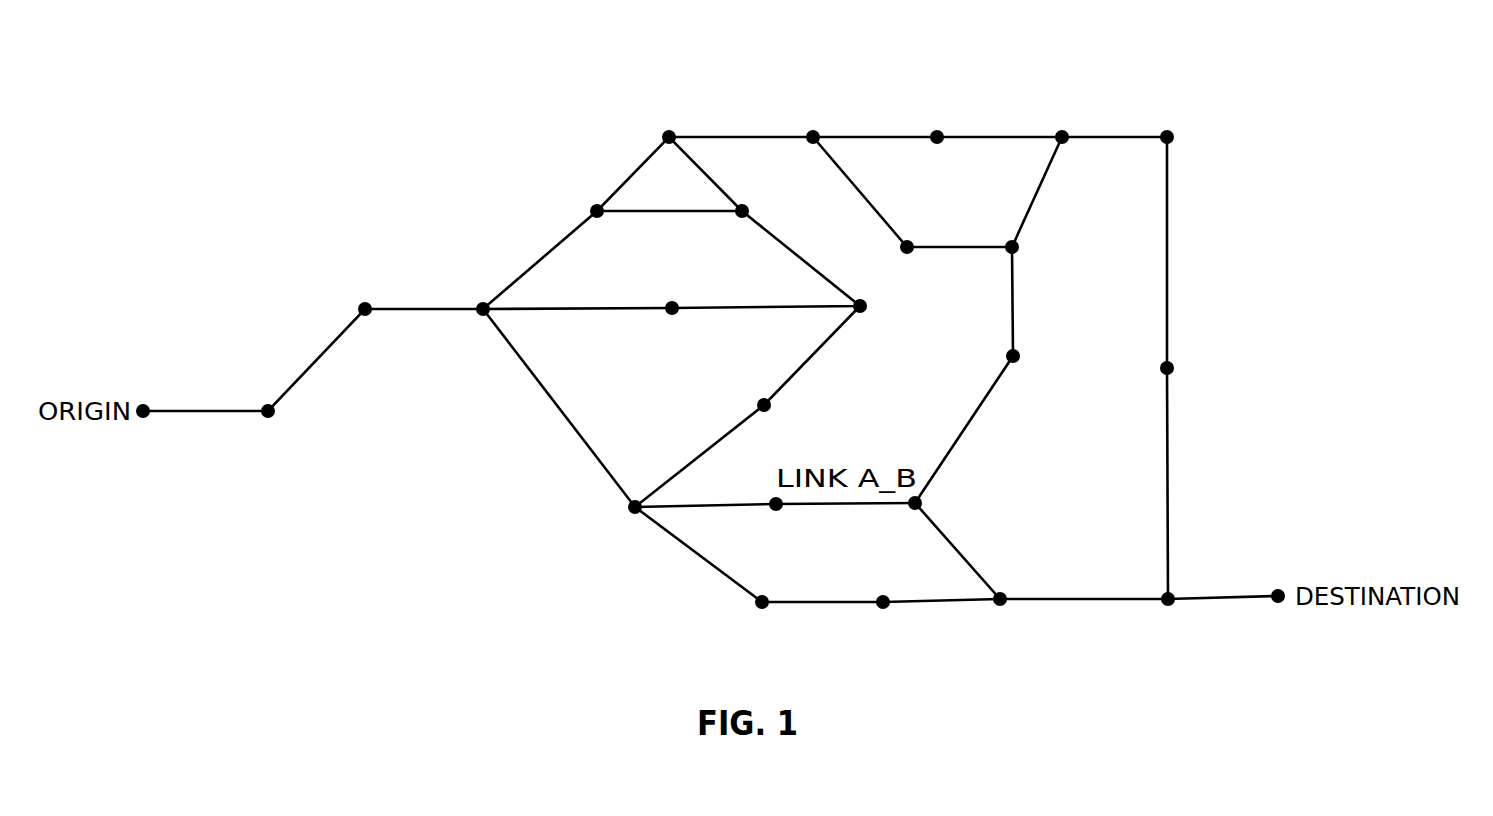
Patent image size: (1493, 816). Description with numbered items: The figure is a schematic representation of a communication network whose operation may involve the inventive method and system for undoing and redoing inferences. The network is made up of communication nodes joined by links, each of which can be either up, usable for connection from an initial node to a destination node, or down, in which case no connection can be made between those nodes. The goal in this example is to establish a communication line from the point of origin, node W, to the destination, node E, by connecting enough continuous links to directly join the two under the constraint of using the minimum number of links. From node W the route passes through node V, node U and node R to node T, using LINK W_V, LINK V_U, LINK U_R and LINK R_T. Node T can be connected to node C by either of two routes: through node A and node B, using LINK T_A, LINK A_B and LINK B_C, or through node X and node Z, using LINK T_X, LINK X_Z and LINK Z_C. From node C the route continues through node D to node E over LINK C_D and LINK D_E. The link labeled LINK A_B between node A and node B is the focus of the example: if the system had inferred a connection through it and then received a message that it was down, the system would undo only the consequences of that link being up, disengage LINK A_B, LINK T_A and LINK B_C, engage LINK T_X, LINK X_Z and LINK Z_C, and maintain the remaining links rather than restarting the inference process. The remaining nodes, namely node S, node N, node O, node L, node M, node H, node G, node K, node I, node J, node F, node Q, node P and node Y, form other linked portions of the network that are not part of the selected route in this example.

The node W is at (143, 395).
The node V is at (267, 395).
The node U is at (364, 294).
The node R is at (483, 294).
The node S is at (590, 199).
The node N is at (668, 121).
The node O is at (749, 198).
The node L is at (813, 121).
The node M is at (937, 121).
The node H is at (1062, 121).
The node G is at (1167, 121).
The node K is at (909, 229).
The node I is at (1020, 248).
The node J is at (1023, 357).
The node F is at (1178, 370).
The node Q is at (672, 293).
The node P is at (871, 307).
The node Y is at (762, 391).
The node T is at (634, 490).
The node A is at (776, 522).
The node B is at (929, 505).
The node X is at (762, 621).
The node Z is at (883, 621).
The node C is at (1000, 618).
The node D is at (1168, 618).
The node E is at (1278, 616).